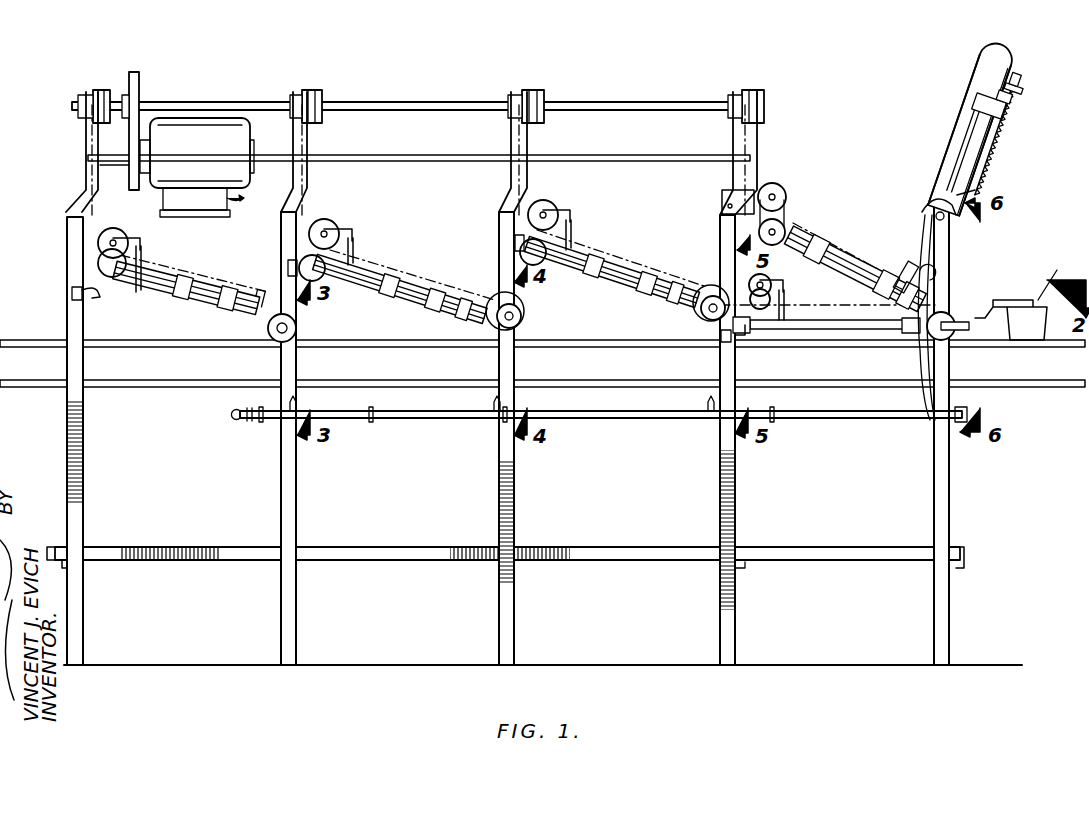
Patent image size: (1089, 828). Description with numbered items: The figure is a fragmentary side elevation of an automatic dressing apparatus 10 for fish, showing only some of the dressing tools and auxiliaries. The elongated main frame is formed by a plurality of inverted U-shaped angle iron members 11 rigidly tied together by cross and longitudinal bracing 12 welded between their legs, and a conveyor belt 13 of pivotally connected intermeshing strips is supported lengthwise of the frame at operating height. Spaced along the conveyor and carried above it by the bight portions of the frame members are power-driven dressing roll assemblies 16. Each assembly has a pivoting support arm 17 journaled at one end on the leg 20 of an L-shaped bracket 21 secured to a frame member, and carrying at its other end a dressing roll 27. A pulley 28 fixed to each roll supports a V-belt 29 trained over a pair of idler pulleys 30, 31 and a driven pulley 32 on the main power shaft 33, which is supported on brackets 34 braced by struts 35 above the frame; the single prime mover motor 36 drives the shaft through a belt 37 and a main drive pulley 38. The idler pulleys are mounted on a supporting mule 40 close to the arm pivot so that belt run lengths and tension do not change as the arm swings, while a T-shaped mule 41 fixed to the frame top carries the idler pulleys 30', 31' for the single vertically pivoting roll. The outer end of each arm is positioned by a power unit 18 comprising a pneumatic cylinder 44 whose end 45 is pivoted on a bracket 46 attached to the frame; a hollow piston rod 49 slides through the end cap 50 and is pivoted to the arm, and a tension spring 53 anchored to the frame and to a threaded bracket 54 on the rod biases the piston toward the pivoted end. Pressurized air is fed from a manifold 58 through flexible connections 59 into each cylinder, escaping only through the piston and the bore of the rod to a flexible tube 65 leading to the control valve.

The automatic dressing apparatus 10 is at (812, 62).
The inverted U-shaped angle iron member 11 is at (84, 480).
The cross and longitudinal bracing 12 is at (175, 560).
The conveyor belt 13 is at (133, 350).
The dressing roll assembly 16 is at (196, 255).
The pivoting support arm 17 is at (198, 298).
The power unit 18 is at (1012, 155).
The bracket leg 20 is at (98, 293).
The L-shaped bracket 21 is at (72, 295).
The dressing roll 27 is at (272, 337).
The pulley 28 is at (503, 328).
The V-belt 29 is at (92, 135).
The idler pulley 30 is at (454, 303).
The idler pulley 30' is at (797, 215).
The idler pulley 31 is at (454, 229).
The idler pulley 31' is at (792, 178).
The driven pulley 32 is at (100, 88).
The main power shaft 33 is at (630, 100).
The bracket 34 is at (86, 160).
The strut 35 is at (385, 162).
The prime mover motor 36 is at (197, 167).
The belt 37 is at (129, 165).
The main drive pulley 38 is at (139, 78).
The supporting mule 40 is at (140, 242).
The mule 41 is at (722, 195).
The pneumatic cylinder 44 is at (980, 118).
The cylinder end 45 is at (975, 190).
The bracket 46 is at (925, 215).
The hollow piston rod 49 is at (950, 160).
The cylinder end cap 50 is at (1017, 101).
The tension spring 53 is at (1013, 127).
The threaded bracket 54 is at (1010, 87).
The air supply manifold 58 is at (665, 415).
The flexible connection 59 is at (930, 205).
The flexible tube 65 is at (930, 278).